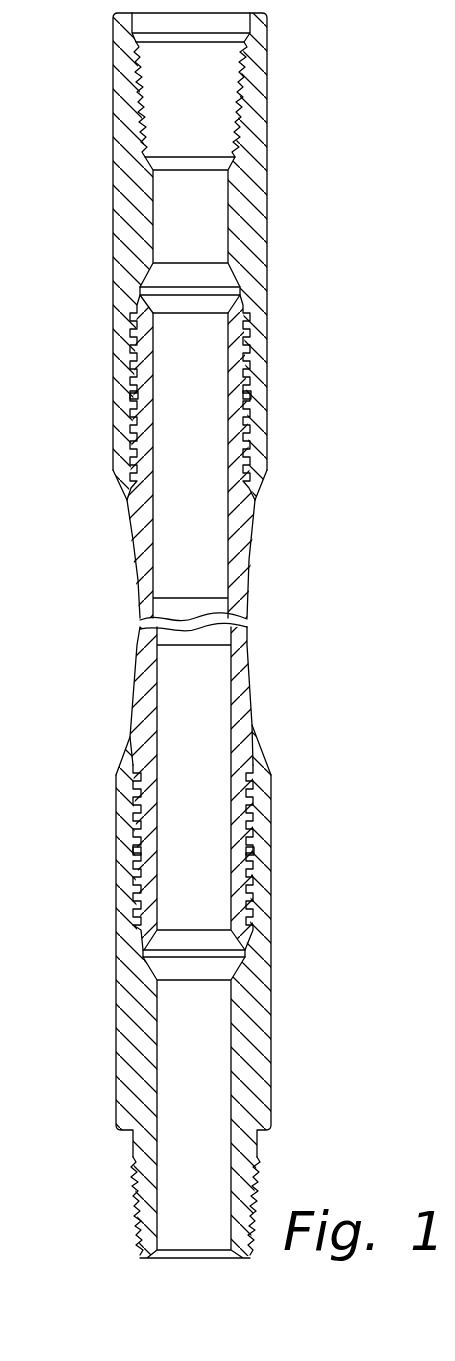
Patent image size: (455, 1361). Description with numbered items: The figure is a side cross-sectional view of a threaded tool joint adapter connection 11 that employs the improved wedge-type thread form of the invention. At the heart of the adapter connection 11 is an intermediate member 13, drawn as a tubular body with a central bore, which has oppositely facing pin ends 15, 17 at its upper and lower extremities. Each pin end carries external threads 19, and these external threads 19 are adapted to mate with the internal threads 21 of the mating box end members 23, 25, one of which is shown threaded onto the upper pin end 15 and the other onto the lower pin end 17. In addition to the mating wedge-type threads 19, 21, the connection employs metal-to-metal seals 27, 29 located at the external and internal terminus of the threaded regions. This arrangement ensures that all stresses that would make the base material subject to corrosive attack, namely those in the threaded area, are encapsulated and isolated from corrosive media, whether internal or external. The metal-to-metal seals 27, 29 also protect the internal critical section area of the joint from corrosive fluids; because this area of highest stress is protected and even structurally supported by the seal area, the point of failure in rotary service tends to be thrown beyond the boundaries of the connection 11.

The threaded tool joint adapter connection 11 is at (90, 354).
The intermediate member 13 is at (250, 562).
The pin end 15 is at (243, 416).
The pin end 17 is at (242, 803).
The external threads 19 is at (245, 362).
The internal threads 21 is at (248, 437).
The box end member 23 is at (258, 222).
The box end member 25 is at (262, 1022).
The metal-to-metal seal 27 is at (243, 300).
The metal-to-metal seal 29 is at (256, 485).